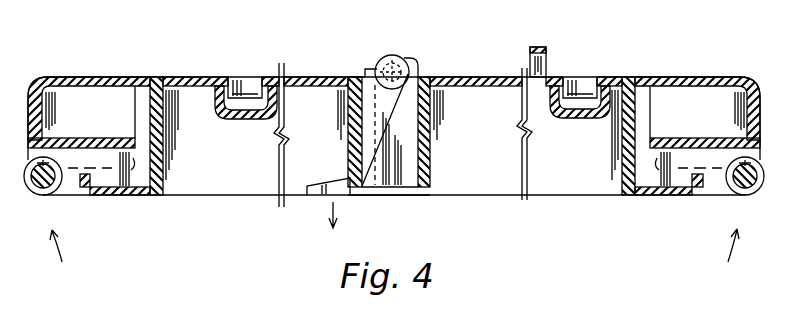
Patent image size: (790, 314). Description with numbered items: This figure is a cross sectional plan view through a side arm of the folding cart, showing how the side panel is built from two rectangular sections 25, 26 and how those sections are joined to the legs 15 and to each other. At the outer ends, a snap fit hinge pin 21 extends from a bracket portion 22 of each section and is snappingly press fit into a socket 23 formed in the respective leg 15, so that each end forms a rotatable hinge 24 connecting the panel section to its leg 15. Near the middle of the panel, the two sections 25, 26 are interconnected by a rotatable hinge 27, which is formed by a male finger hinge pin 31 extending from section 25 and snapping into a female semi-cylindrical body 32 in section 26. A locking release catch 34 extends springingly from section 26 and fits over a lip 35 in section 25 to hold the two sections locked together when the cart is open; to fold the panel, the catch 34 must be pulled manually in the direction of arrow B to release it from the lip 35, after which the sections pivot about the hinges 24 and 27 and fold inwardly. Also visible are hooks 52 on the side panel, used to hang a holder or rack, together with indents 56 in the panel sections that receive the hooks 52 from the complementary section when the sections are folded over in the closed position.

The leg 15 is at (96, 77).
The snap fit hinge pin 21 is at (58, 178).
The bracket portion 22 is at (72, 188).
The socket 23 is at (30, 205).
The rotatable hinge 24 is at (394, 257).
The section 25 is at (190, 77).
The section 26 is at (476, 77).
The rotatable hinge 27 is at (416, 49).
The male finger hinge pin 31 is at (375, 60).
The female semi-cylindrical body 32 is at (392, 60).
The locking release catch 34 is at (307, 190).
The lip 35 is at (348, 194).
The hook 52 is at (538, 46).
The indent 56 is at (246, 87).
The arrow B is at (333, 218).